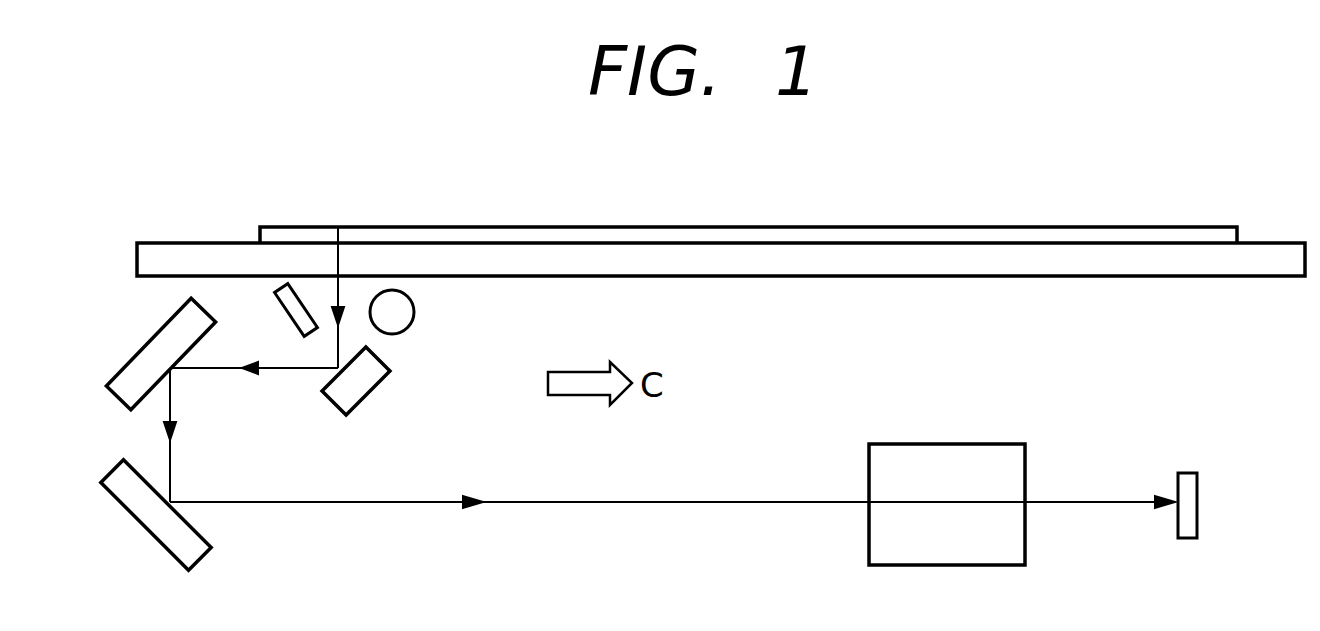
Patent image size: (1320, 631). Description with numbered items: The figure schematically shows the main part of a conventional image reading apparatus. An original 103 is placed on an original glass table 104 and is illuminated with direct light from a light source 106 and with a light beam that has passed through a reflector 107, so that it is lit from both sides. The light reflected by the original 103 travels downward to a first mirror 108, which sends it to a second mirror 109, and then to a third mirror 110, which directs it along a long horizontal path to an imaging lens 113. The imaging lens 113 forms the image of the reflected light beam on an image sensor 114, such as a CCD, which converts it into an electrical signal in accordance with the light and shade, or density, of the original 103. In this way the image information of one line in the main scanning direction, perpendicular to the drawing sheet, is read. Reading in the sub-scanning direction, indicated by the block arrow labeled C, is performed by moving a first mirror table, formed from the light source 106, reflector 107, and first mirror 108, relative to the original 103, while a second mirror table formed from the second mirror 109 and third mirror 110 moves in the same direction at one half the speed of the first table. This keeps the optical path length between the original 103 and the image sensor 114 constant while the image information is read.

The original 103 is at (890, 226).
The original glass table 104 is at (1276, 258).
The light source 106 is at (395, 312).
The reflector 107 is at (293, 303).
The first mirror 108 is at (367, 375).
The second mirror 109 is at (158, 360).
The third mirror 110 is at (140, 503).
The imaging lens 113 is at (978, 467).
The image sensor 114 is at (1188, 482).